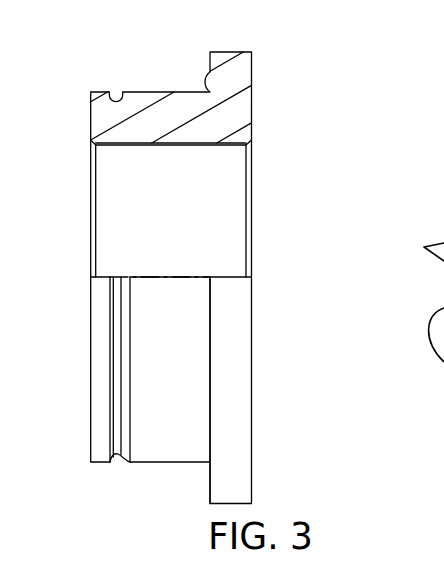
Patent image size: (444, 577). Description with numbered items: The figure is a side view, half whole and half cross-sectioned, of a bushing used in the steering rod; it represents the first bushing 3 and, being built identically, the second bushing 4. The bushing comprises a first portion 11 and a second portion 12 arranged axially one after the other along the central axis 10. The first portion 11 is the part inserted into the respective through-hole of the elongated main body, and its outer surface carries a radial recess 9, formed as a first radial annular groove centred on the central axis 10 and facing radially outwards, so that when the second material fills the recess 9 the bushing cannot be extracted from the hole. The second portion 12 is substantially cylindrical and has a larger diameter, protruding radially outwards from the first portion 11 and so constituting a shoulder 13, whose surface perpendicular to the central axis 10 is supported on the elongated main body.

The first bushing 3 is at (256, 300).
The second bushing 4 is at (327, 165).
The radial recess 9 is at (120, 472).
The central axis 10 is at (169, 277).
The first portion 11 is at (162, 319).
The second portion 12 is at (229, 445).
The shoulder 13 is at (209, 487).